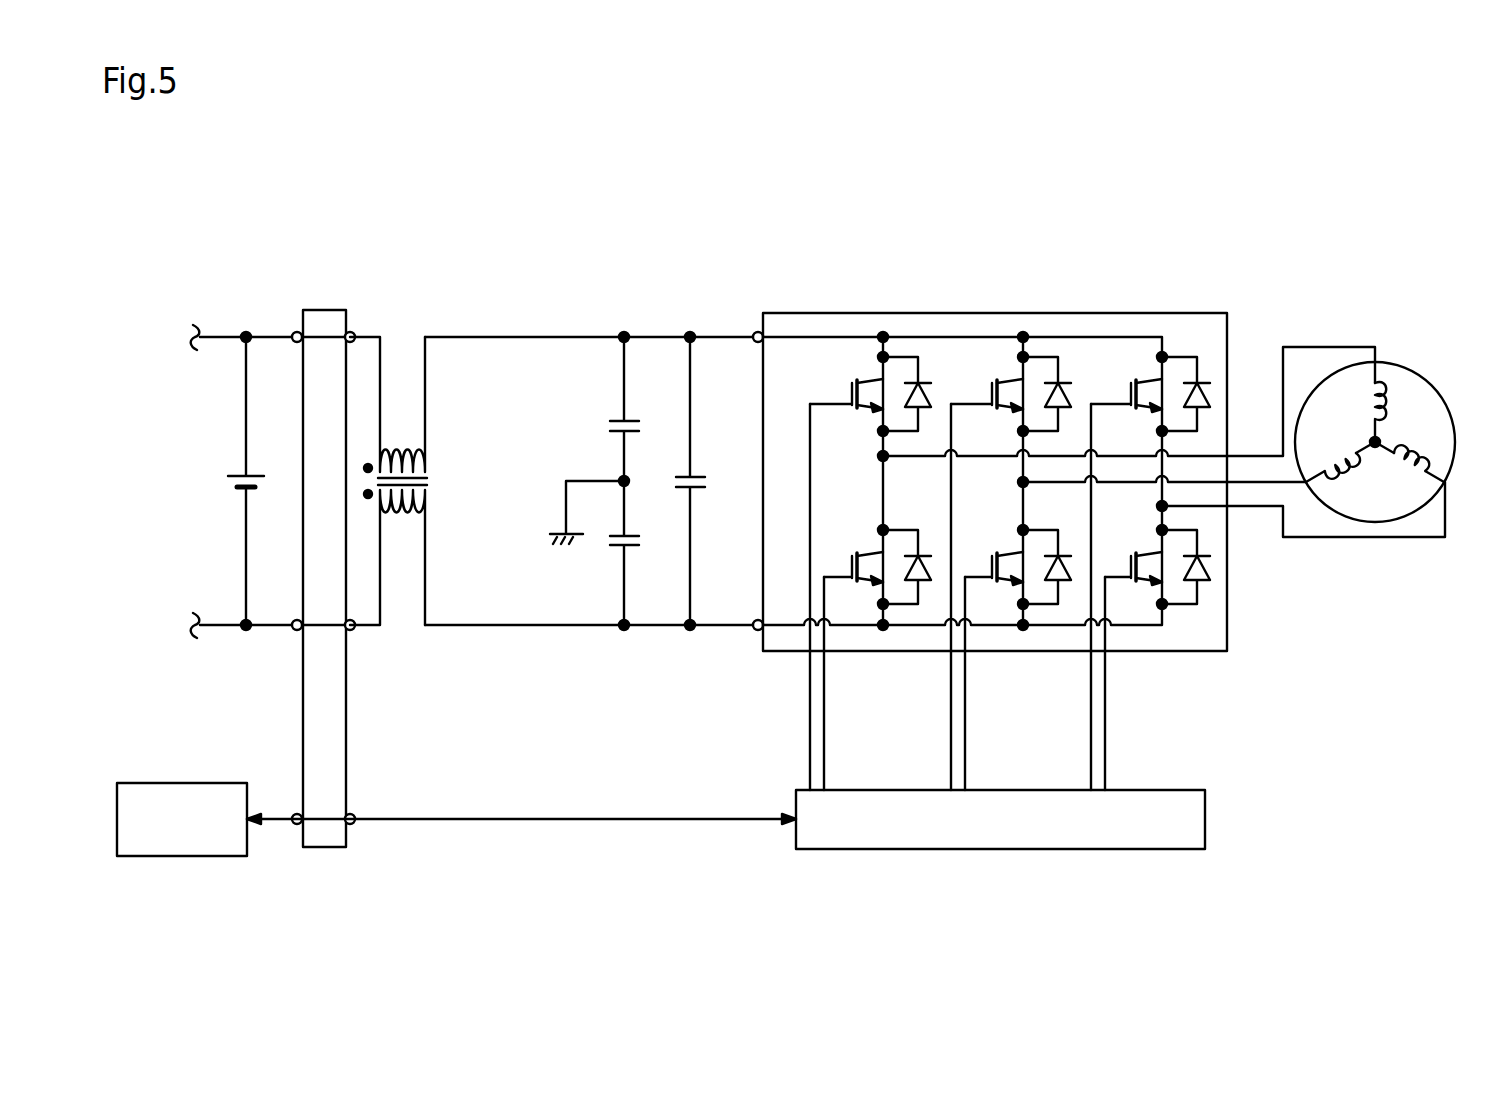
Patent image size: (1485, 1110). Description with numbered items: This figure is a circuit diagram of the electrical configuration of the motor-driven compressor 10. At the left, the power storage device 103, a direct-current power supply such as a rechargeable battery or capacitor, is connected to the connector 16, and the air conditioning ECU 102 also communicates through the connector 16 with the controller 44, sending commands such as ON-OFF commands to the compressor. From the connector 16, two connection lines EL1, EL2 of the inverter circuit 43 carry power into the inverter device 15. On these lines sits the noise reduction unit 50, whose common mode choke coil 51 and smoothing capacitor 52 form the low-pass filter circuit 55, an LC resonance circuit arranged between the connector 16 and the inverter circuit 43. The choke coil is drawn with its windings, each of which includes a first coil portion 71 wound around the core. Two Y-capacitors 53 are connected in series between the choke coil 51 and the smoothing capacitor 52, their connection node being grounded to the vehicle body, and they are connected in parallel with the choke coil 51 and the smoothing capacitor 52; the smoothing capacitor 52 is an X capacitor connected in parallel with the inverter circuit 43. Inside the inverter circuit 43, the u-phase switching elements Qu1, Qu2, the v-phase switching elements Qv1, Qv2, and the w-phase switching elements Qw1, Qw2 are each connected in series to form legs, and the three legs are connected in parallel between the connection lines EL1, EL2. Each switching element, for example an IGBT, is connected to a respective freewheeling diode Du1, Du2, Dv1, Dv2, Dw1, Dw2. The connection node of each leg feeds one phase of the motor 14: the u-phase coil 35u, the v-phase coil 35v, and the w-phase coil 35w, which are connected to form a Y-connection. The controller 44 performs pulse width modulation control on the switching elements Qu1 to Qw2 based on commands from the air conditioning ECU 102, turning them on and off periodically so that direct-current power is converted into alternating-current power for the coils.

The motor-driven compressor 10 is at (1096, 496).
The electric motor 14 is at (1381, 413).
The inverter device 15 is at (1085, 508).
The connector 16 is at (324, 310).
The inverter circuit 43 is at (1028, 443).
The controller 44 is at (1182, 790).
The noise reduction unit 50 is at (637, 426).
The common mode choke coil 51 is at (413, 464).
The smoothing capacitor 52 is at (696, 476).
The Y-capacitor 53 is at (630, 420).
The low-pass filter circuit 55 is at (1085, 453).
The first coil portion 71 is at (422, 454).
The air conditioning ECU 102 is at (206, 783).
The power storage device 103 is at (233, 476).
The u-phase coil 35u is at (1388, 400).
The v-phase coil 35v is at (1344, 468).
The w-phase coil 35w is at (1417, 468).
The connection line EL1 is at (582, 336).
The connection line EL2 is at (597, 629).
The u-phase switching element Qu1 is at (849, 388).
The u-phase switching element Qu2 is at (850, 557).
The v-phase switching element Qv1 is at (989, 388).
The v-phase switching element Qv2 is at (990, 557).
The w-phase switching element Qw1 is at (1129, 388).
The w-phase switching element Qw2 is at (1130, 557).
The freewheeling diode Du1 is at (923, 380).
The freewheeling diode Du2 is at (921, 555).
The freewheeling diode Dv1 is at (1063, 380).
The freewheeling diode Dv2 is at (1061, 555).
The freewheeling diode Dw1 is at (1210, 364).
The freewheeling diode Dw2 is at (1214, 574).